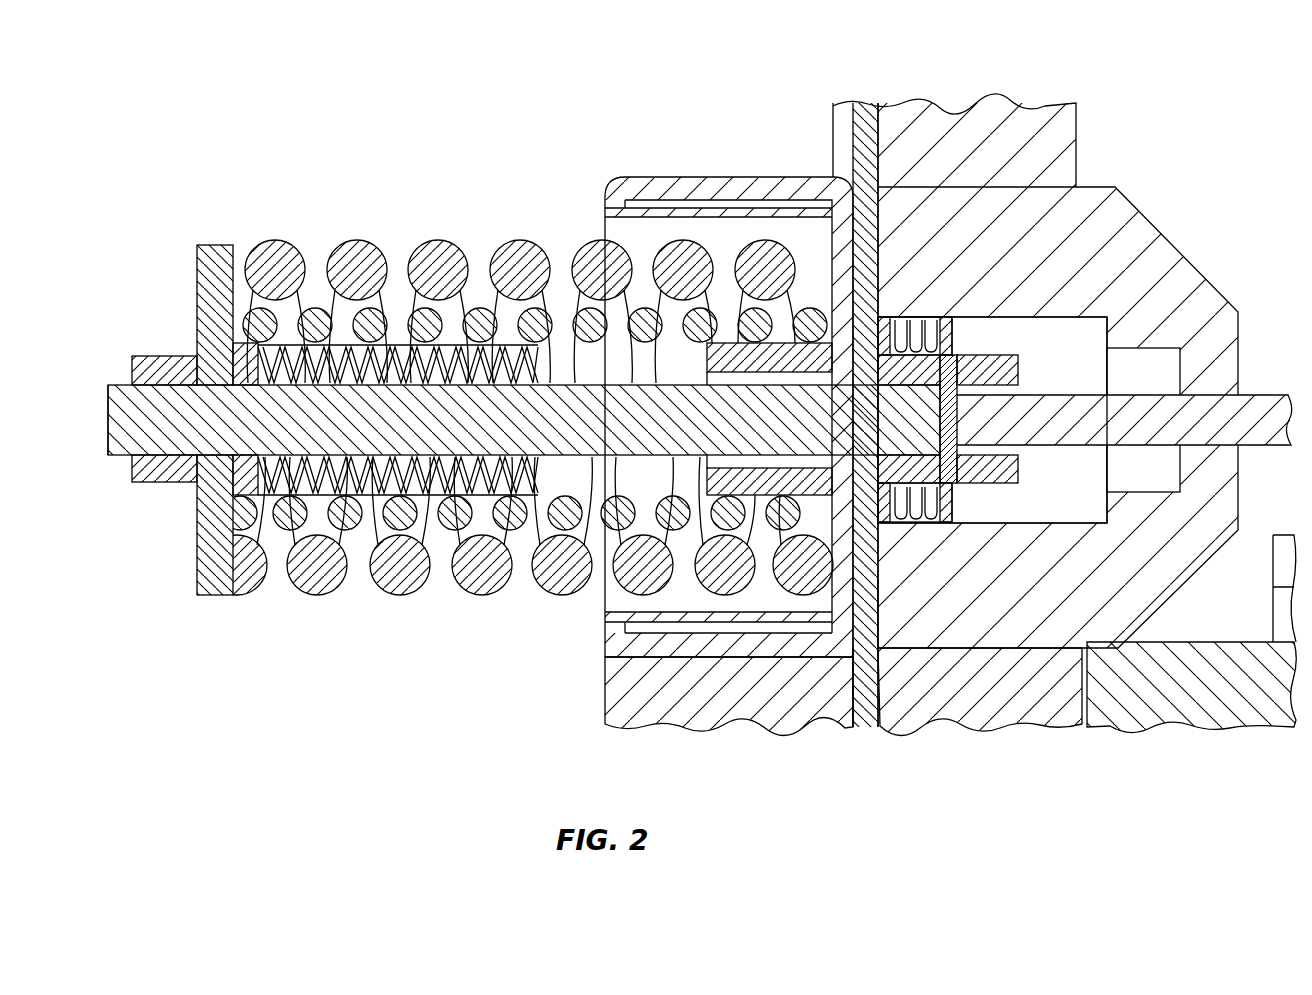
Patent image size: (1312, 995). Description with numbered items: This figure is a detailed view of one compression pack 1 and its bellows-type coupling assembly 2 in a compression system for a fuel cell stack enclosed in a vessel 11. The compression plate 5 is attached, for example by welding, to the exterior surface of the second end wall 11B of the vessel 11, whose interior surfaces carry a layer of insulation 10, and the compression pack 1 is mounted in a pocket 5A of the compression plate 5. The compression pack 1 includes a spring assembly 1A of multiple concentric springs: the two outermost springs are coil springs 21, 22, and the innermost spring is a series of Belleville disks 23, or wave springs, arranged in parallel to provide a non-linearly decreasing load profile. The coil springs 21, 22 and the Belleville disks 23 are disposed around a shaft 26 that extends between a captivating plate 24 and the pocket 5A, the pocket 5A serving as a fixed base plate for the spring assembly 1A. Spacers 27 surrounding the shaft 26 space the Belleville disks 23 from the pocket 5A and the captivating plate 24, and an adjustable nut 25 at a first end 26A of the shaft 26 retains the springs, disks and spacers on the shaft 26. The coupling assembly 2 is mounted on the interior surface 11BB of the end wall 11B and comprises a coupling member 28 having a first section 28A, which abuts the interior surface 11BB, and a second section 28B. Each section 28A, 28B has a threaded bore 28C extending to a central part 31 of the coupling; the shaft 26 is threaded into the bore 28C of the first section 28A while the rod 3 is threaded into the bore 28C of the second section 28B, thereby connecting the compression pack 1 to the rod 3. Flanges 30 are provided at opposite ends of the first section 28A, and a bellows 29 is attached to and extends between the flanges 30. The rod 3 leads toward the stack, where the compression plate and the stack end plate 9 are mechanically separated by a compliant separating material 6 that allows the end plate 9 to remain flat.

The compression pack 1 is at (458, 170).
The spring assembly 1A is at (520, 232).
The coupling assembly 2 is at (960, 350).
The rod 3 is at (1262, 408).
The compression plate 5 is at (645, 697).
The pocket 5A is at (712, 232).
The compliant separating material 6 is at (965, 697).
The end plate 9 is at (1228, 675).
The layer of insulation 10 is at (1010, 117).
The vessel 11 is at (867, 705).
The second end wall 11B is at (858, 672).
The interior surface 11BB is at (880, 606).
The coil spring 21 is at (275, 258).
The coil spring 22 is at (378, 330).
The Belleville disks 23 is at (468, 360).
The captivating plate 24 is at (206, 250).
The adjustable nut 25 is at (152, 368).
The shaft 26 is at (287, 420).
The first end of the shaft 26A is at (125, 437).
The spacers 27 is at (242, 366).
The coupling member 28 is at (990, 393).
The first section 28A is at (940, 372).
The second section 28B is at (1000, 375).
The threaded bore 28C is at (1018, 464).
The bellows 29 is at (916, 318).
The flanges 30 is at (905, 522).
The central part 31 is at (952, 420).